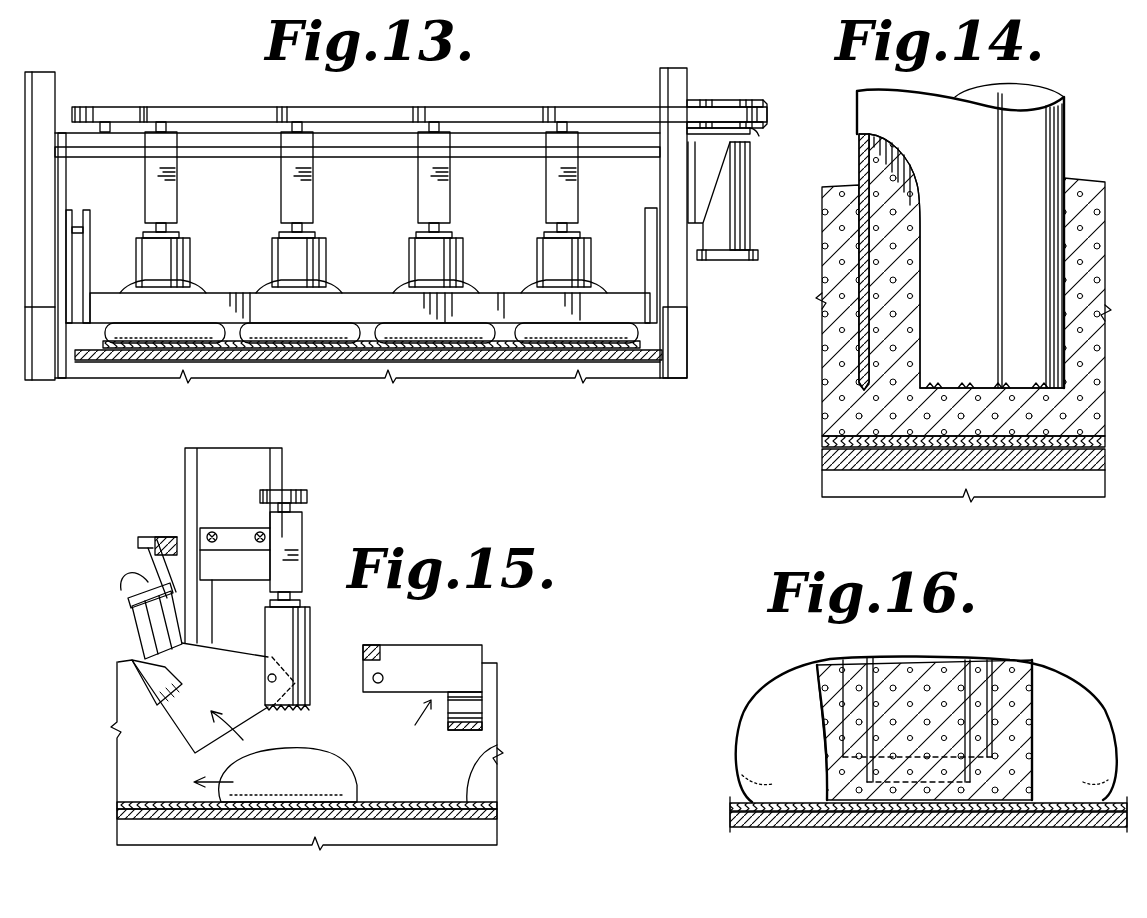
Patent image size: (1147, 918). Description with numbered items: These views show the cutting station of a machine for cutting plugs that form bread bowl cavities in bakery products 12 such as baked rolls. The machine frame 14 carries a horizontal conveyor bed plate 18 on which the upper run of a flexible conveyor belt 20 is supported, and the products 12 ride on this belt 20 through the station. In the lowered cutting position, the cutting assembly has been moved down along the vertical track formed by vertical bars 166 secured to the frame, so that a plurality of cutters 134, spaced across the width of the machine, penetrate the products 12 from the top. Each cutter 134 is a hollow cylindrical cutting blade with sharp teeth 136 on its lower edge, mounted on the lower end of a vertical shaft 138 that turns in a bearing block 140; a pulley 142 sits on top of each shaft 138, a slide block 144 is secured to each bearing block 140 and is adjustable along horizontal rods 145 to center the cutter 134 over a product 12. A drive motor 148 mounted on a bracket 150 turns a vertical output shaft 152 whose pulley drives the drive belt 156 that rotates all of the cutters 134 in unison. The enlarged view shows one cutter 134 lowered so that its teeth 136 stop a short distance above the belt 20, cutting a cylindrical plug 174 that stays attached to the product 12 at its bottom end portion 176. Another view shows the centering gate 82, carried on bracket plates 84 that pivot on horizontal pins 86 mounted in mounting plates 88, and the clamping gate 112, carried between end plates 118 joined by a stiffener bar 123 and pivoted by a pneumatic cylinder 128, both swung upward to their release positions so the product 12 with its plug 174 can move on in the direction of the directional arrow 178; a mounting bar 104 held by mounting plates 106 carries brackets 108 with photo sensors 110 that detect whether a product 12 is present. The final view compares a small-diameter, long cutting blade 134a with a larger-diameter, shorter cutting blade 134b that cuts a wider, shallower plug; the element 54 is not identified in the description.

In FIG. 13, the bakery products 12 is at (150, 328).
In FIG. 14, the bakery products 12 is at (1094, 198).
In FIG. 15, the bakery products 12 is at (324, 756).
In FIG. 16, the bakery products 12 is at (777, 693).
In FIG. 14, the frame 14 is at (909, 490).
In FIG. 15, the frame 14 is at (125, 832).
In FIG. 13, the conveyor bed plate 18 is at (642, 361).
In FIG. 14, the conveyor bed plate 18 is at (828, 459).
In FIG. 15, the conveyor bed plate 18 is at (494, 816).
In FIG. 16, the conveyor bed plate 18 is at (736, 817).
In FIG. 13, the conveyor belt 20 is at (632, 340).
In FIG. 14, the conveyor belt 20 is at (822, 443).
In FIG. 15, the conveyor belt 20 is at (417, 803).
In FIG. 16, the conveyor belt 20 is at (773, 805).
In FIG. 13, the carriage end hook 54 is at (764, 103).
In FIG. 13, the centering gate 82 is at (217, 297).
In FIG. 15, the centering gate 82 is at (142, 673).
In FIG. 13, the bracket plates 84 is at (86, 236).
In FIG. 15, the bracket plates 84 is at (188, 733).
In FIG. 15, the horizontal pins 86 is at (267, 679).
In FIG. 13, the mounting plates 88 is at (70, 255).
In FIG. 15, the mounting bar 104 is at (167, 537).
In FIG. 15, the mounting plates 106 is at (140, 562).
In FIG. 15, the brackets 108 is at (145, 543).
In FIG. 15, the photo sensors 110 is at (152, 626).
In FIG. 15, the clamping gate 112 is at (478, 719).
In FIG. 15, the end plates 118 is at (450, 652).
In FIG. 15, the stiffener bar 123 is at (371, 645).
In FIG. 15, the pneumatic cylinder 128 is at (383, 674).
In FIG. 13, the cutters 134 is at (277, 250).
In FIG. 14, the cutters 134 is at (1057, 147).
In FIG. 15, the cutters 134 is at (306, 670).
In FIG. 16, the cutting blade 134a is at (968, 663).
In FIG. 16, the cutting blade 134b is at (992, 678).
In FIG. 14, the teeth 136 is at (961, 390).
In FIG. 13, the vertical shaft 138 is at (180, 233).
In FIG. 15, the vertical shaft 138 is at (300, 604).
In FIG. 13, the bearing block 140 is at (148, 161).
In FIG. 15, the bearing block 140 is at (302, 526).
In FIG. 15, the pulley 142 is at (308, 492).
In FIG. 15, the slide block 144 is at (222, 528).
In FIG. 15, the horizontal rods 145 is at (208, 532).
In FIG. 13, the drive motor 148 is at (742, 195).
In FIG. 13, the bracket 150 is at (713, 165).
In FIG. 13, the vertical output shaft 152 is at (753, 134).
In FIG. 13, the drive belt 156 is at (478, 112).
In FIG. 15, the drive belt 156 is at (268, 492).
In FIG. 13, the vertical bars 166 is at (43, 373).
In FIG. 14, the cylindrical plug 174 is at (914, 203).
In FIG. 16, the cylindrical plug 174 is at (925, 667).
In FIG. 14, the bottom end portion 176 is at (880, 395).
In FIG. 15, the directional arrow 178 is at (233, 782).